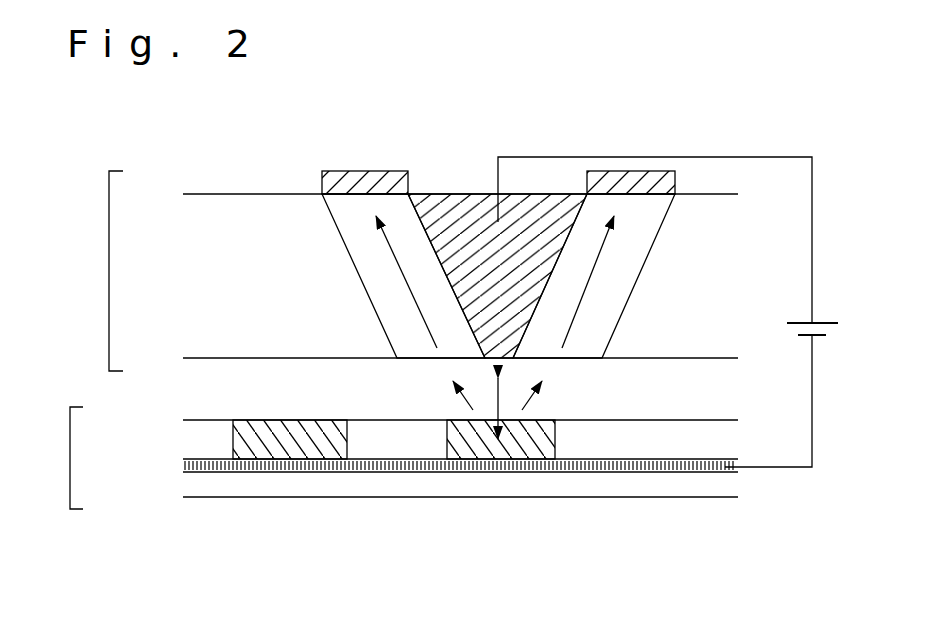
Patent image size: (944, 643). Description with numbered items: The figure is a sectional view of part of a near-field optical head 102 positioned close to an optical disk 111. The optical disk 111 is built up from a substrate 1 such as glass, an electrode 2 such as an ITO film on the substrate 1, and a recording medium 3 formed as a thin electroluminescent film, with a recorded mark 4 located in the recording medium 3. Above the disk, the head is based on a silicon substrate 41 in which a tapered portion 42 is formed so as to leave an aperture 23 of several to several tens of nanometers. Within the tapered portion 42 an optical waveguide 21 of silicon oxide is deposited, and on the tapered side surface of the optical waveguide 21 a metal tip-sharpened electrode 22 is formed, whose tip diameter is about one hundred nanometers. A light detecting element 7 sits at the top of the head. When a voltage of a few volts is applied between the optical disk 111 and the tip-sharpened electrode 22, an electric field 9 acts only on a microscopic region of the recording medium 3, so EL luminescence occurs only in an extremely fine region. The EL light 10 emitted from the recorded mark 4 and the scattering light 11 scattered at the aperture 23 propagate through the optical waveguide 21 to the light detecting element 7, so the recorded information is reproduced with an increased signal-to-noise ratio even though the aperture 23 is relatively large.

The substrate 1 is at (222, 485).
The electrode 2 is at (203, 465).
The recording medium 3 is at (203, 433).
The recorded mark 4 is at (278, 447).
The light detecting element 7 is at (600, 178).
The electric field 9 is at (505, 410).
The EL light 10 is at (448, 395).
The scattering light 11 is at (382, 237).
The optical waveguide 21 is at (610, 297).
The tip-sharpened electrode 22 is at (548, 247).
The aperture 23 is at (422, 350).
The silicon substrate 41 is at (205, 236).
The tapered portion 42 is at (372, 310).
The near-field optical head 102 is at (83, 271).
The optical disk 111 is at (44, 458).